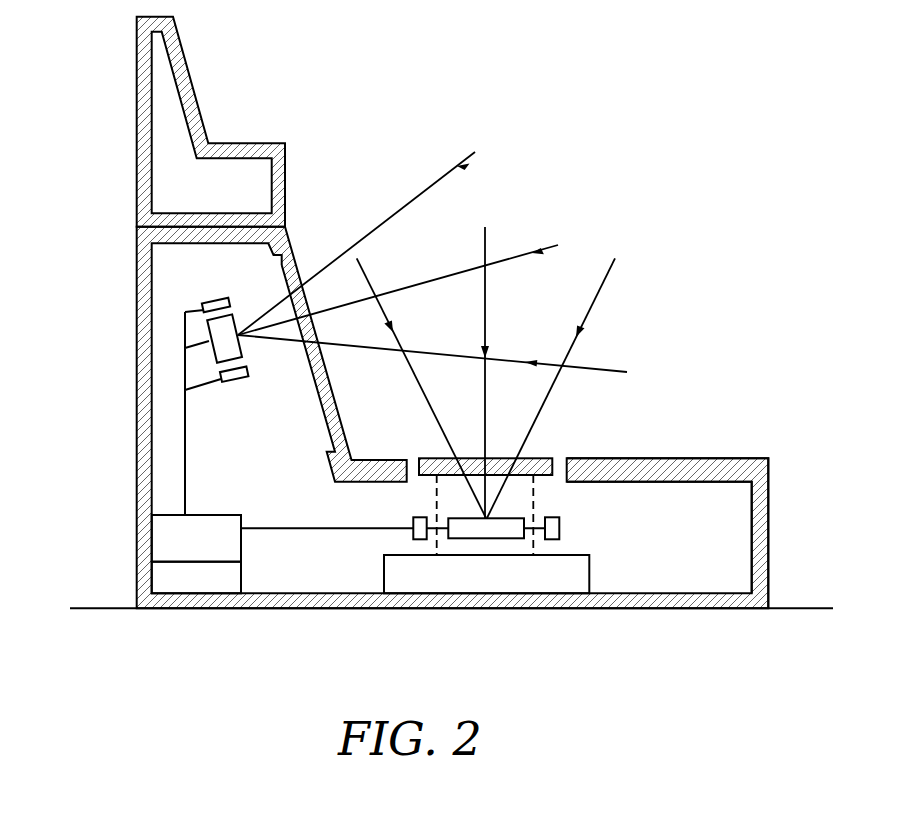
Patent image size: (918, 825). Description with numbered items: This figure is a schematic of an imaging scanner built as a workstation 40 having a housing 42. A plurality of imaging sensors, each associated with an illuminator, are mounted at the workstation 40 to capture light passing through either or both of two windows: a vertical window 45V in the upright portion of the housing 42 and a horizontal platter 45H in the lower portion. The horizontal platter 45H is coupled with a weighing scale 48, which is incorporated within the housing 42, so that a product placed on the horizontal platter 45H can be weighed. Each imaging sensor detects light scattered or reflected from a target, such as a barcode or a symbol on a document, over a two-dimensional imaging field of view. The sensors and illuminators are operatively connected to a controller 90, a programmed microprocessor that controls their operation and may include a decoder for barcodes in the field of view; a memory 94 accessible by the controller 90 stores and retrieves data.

The workstation 40 is at (451, 313).
The housing 42 is at (740, 458).
The vertical window 45V is at (294, 272).
The horizontal platter 45H is at (532, 458).
The weighing scale 48 is at (393, 568).
The controller 90 is at (158, 537).
The memory 94 is at (158, 580).